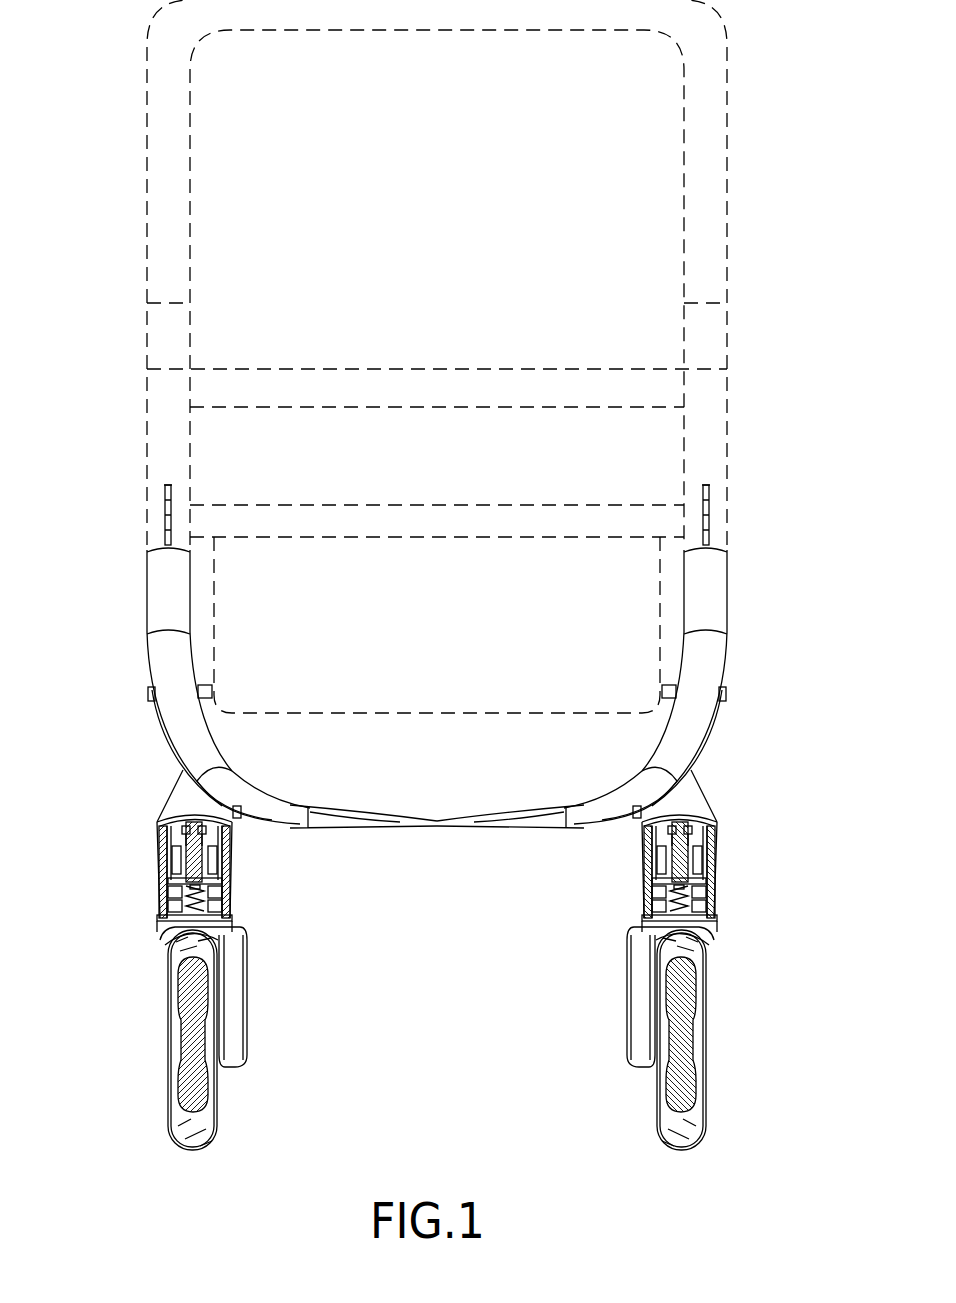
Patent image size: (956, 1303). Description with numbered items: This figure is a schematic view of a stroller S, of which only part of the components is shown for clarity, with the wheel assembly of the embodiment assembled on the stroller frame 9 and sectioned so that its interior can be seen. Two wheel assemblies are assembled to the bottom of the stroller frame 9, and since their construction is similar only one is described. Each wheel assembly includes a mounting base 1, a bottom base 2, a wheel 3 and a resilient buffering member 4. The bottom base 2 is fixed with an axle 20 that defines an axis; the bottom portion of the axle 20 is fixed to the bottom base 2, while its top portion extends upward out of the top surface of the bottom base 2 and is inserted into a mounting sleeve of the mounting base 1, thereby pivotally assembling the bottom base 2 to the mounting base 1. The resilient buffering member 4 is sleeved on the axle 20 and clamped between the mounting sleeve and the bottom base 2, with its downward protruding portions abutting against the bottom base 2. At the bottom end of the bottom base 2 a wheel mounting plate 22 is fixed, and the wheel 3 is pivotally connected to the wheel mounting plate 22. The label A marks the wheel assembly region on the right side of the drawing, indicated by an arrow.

The stroller S is at (716, 228).
The stroller frame 9 is at (703, 585).
The mounting base 1 is at (718, 830).
The axle 20 is at (690, 858).
The resilient buffering member 4 is at (712, 874).
The bottom base 2 is at (712, 898).
The wheel mounting plate 22 is at (630, 1006).
The wheel 3 is at (690, 1090).
The detail view A is at (624, 852).